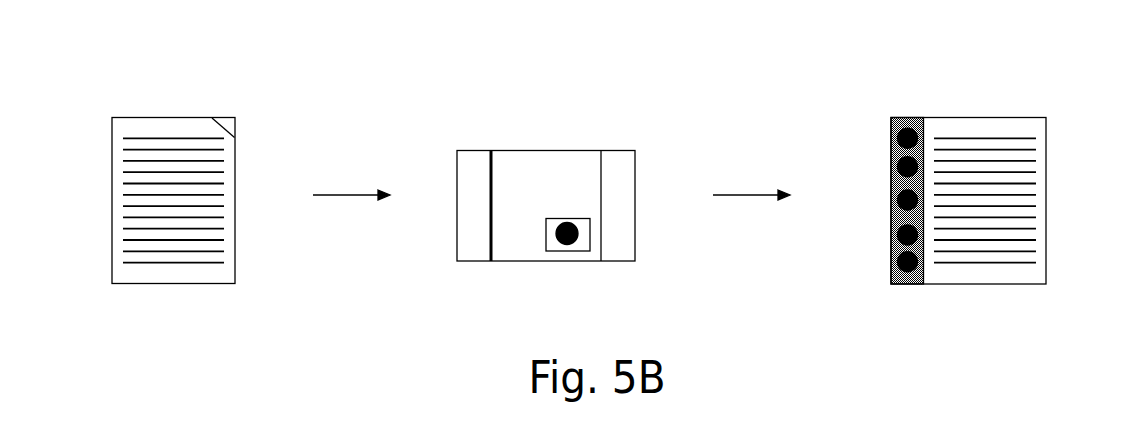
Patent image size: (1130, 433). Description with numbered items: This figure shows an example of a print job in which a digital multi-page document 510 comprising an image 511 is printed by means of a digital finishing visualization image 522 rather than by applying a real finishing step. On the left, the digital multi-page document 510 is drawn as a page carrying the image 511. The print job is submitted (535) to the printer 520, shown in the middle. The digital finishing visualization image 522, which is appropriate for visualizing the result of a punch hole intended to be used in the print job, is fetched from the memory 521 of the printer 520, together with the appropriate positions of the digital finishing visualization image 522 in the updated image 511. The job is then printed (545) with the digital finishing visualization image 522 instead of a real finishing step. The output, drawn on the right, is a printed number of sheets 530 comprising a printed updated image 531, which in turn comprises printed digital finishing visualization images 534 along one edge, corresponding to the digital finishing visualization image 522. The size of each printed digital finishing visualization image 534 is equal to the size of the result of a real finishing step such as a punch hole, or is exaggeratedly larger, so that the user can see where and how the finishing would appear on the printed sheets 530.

The digital multi-page document 510 is at (138, 116).
The image 511 is at (145, 195).
The print job submission 535 is at (350, 194).
The printer 520 is at (575, 150).
The memory 521 is at (553, 217).
The digital finishing visualization image 522 is at (577, 242).
The printing step 545 is at (750, 194).
The printed number of sheets 530 is at (995, 117).
The printed updated image 531 is at (1023, 192).
The printed digital finishing visualization image 534 is at (910, 273).